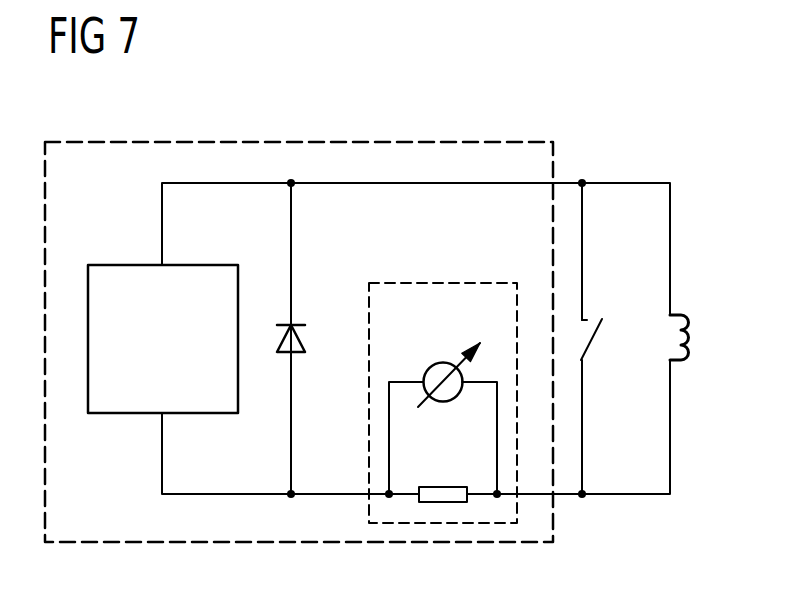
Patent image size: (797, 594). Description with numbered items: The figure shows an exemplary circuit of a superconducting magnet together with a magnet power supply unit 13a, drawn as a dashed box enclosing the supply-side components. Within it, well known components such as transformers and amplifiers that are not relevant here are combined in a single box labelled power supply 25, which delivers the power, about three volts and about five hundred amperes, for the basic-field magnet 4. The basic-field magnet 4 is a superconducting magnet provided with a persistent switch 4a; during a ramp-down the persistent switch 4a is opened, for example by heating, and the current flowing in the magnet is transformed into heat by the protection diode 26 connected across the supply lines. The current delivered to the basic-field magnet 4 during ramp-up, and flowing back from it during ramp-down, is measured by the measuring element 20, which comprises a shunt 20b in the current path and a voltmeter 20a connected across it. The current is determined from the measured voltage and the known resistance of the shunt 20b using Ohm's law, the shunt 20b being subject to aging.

The magnet power supply unit 13a is at (293, 141).
The power supply 25 is at (115, 264).
The protection diode 26 is at (293, 324).
The measuring element 20 is at (448, 282).
The voltmeter 20a is at (442, 358).
The shunt 20b is at (443, 485).
The persistent switch 4a is at (592, 343).
The basic-field magnet 4 is at (689, 330).